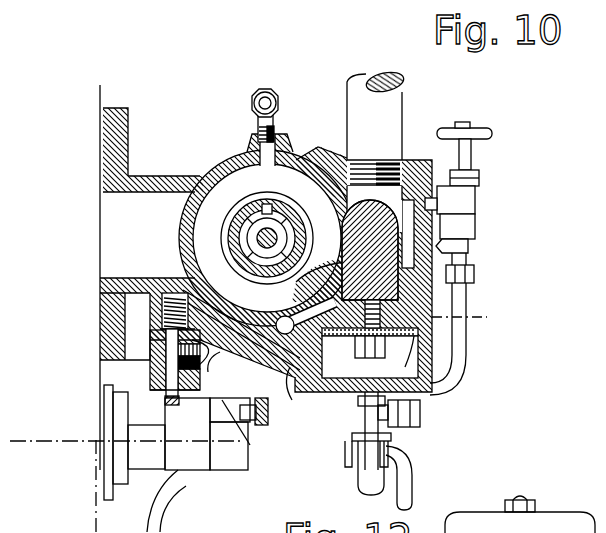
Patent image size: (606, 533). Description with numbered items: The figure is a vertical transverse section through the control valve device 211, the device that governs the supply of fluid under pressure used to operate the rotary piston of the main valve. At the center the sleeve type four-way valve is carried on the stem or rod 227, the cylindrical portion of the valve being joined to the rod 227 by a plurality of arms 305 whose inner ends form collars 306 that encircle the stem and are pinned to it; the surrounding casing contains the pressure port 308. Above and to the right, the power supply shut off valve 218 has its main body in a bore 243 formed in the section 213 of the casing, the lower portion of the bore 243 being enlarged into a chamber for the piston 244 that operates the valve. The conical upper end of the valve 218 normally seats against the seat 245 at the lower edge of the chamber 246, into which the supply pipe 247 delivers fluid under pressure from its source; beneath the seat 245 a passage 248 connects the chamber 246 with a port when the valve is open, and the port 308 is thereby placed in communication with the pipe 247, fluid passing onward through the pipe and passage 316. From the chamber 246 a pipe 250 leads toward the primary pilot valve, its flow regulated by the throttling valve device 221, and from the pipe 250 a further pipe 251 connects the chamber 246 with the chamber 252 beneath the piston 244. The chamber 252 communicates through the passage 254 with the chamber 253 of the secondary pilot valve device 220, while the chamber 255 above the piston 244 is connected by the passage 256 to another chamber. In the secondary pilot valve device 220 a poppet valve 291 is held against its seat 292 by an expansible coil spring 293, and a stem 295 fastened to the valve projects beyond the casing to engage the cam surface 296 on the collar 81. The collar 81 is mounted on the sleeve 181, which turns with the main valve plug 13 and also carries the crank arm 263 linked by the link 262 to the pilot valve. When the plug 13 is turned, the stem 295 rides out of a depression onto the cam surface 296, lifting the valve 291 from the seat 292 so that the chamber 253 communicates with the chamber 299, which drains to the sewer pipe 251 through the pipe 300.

The valve plug 13 is at (391, 352).
The collar 81 is at (179, 471).
The sleeve 181 is at (148, 456).
The control valve device 211 is at (130, 110).
The section of the control valve casing 213 is at (150, 177).
The power supply shut off valve 218 is at (413, 207).
The secondary pilot valve device 220 is at (158, 350).
The throttling valve device 221 is at (482, 117).
The rod 227 is at (258, 237).
The bore 243 is at (470, 290).
The piston 244 is at (433, 333).
The seat 245 is at (322, 167).
The chamber 246 is at (385, 194).
The pipe 247 is at (398, 103).
The passage 248 is at (410, 233).
The pipe 250 is at (468, 245).
The pipe 251 is at (456, 383).
The chamber 252 is at (449, 400).
The chamber 253 is at (102, 293).
The passage 254 is at (294, 378).
The chamber 255 is at (420, 320).
The passage 256 is at (296, 308).
The link 262 is at (266, 420).
The crank arm 263 is at (224, 404).
The poppet valve 291 is at (150, 342).
The seat 292 is at (150, 332).
The expansible coil spring 293 is at (177, 296).
The stem 295 is at (160, 383).
The cam surface 296 is at (166, 410).
The chamber 299 is at (150, 372).
The pipe 300 is at (227, 374).
The arms 305 is at (297, 188).
The collars 306 is at (259, 231).
The port 308 is at (237, 183).
The pipe and passage 316 is at (271, 97).